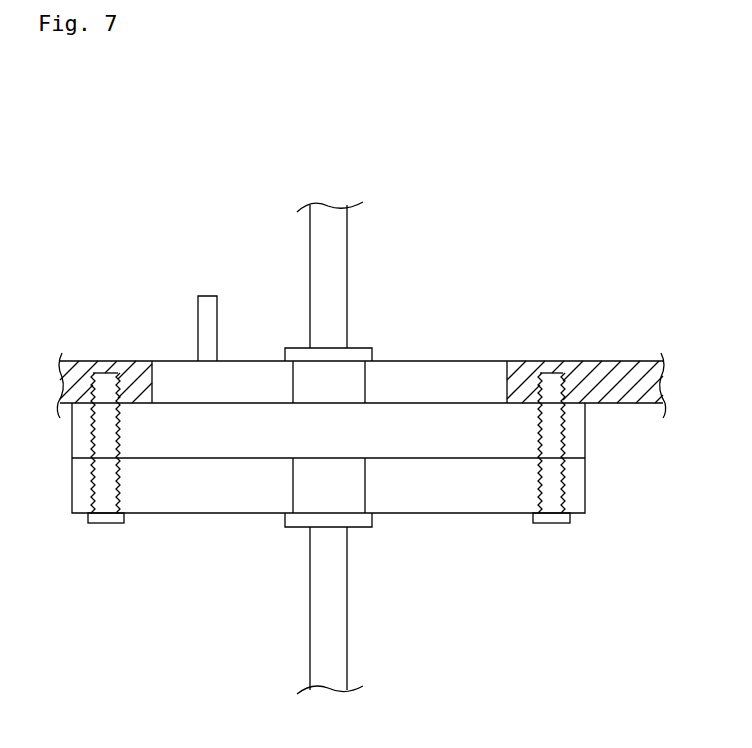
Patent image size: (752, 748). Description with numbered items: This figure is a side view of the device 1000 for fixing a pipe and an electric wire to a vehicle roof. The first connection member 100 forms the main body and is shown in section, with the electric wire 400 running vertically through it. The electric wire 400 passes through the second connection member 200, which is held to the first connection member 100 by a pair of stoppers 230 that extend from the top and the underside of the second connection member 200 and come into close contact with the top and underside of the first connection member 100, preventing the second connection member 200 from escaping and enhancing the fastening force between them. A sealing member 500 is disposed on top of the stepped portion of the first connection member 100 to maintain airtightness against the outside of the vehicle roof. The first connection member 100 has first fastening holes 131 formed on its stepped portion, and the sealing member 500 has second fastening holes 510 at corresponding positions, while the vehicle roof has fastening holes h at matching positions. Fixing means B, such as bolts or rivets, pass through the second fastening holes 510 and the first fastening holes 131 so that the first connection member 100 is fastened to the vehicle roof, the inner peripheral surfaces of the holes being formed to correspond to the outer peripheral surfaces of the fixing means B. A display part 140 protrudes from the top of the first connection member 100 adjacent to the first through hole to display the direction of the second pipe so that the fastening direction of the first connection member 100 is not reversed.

The device for fixing a pipe and an electric wire 1000 is at (500, 196).
The first connection member 100 is at (592, 525).
The first fastening holes 131 is at (553, 481).
The sealing member 500 is at (577, 420).
The fastening holes h is at (100, 376).
The second fastening holes 510 is at (543, 417).
The fixing means B is at (551, 524).
The display part 140 is at (205, 300).
The electric wire 400 is at (337, 270).
The second connection member 200 is at (295, 535).
The stoppers 230 is at (365, 351).